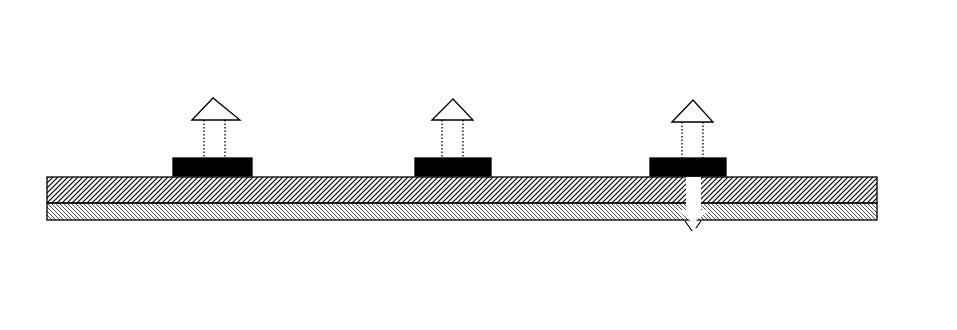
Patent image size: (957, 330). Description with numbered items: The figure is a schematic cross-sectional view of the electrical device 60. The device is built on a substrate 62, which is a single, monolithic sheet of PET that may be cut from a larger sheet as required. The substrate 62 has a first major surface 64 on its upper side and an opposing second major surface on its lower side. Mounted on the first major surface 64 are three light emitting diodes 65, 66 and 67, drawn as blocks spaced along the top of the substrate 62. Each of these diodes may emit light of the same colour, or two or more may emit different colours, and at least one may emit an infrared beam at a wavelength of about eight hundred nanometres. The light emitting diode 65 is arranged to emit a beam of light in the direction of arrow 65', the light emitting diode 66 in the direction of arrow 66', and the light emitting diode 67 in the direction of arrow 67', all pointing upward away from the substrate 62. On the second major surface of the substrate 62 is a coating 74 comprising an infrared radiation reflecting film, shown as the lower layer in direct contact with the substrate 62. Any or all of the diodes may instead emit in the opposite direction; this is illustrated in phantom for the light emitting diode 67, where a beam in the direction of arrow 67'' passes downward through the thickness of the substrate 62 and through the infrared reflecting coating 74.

The electrical device 60 is at (618, 92).
The substrate 62 is at (82, 185).
The first major surface 64 is at (462, 156).
The light emitting diode 65 is at (248, 133).
The arrow 65' is at (228, 104).
The light emitting diode 66 is at (496, 147).
The arrow 66' is at (489, 110).
The light emitting diode 67 is at (722, 137).
The arrow 67' is at (711, 108).
The arrow 67'' is at (659, 221).
The coating 74 is at (127, 207).